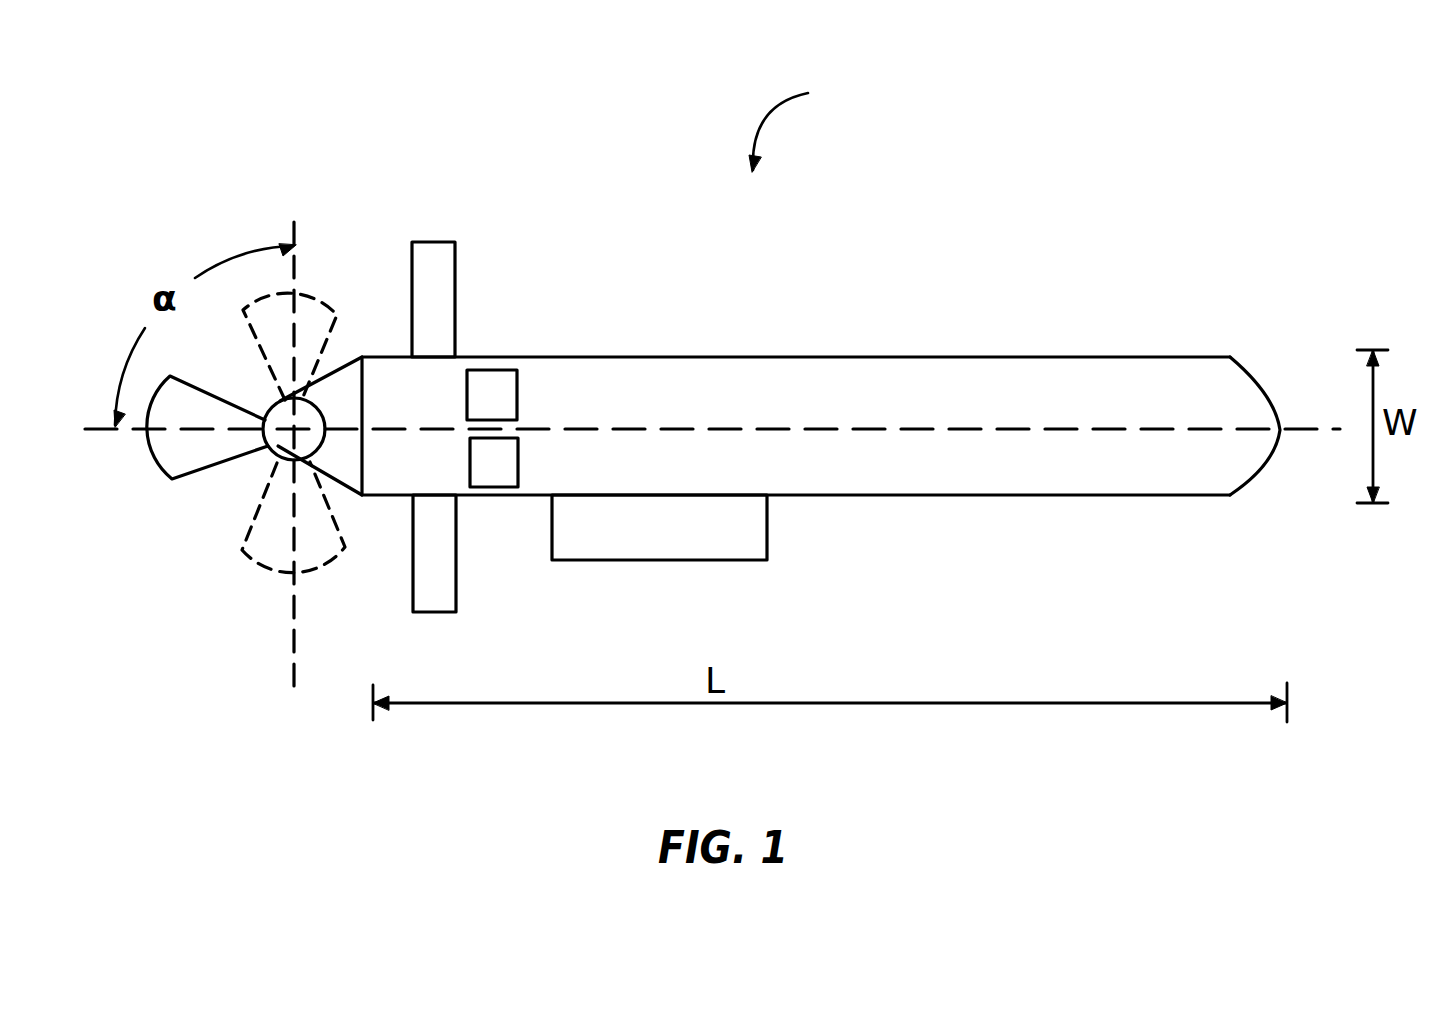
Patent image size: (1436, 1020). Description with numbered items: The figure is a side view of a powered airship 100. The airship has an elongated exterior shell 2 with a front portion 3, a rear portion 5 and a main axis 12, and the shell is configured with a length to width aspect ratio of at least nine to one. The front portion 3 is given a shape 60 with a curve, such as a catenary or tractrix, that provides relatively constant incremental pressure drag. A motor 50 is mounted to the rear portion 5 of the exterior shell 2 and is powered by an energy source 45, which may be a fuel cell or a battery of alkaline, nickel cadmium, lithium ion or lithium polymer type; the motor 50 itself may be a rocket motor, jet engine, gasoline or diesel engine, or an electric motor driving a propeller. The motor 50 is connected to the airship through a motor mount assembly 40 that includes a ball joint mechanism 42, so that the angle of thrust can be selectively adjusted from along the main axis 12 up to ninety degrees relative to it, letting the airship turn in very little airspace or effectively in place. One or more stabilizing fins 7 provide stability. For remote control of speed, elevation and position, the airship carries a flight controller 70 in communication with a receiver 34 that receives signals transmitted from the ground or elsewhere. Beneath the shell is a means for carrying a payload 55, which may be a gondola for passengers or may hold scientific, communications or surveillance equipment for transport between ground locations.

The powered airship 100 is at (816, 125).
The exterior shell 2 is at (818, 357).
The front portion 3 is at (1246, 345).
The rear portion 5 is at (397, 345).
The stabilizing fins 7 is at (432, 267).
The main axis 12 is at (1296, 428).
The receiver 34 is at (497, 390).
The motor mount assembly 40 is at (297, 463).
The ball joint mechanism 42 is at (282, 441).
The energy source 45 is at (428, 479).
The motor 50 is at (155, 455).
The payload 55 is at (676, 544).
The shape 60 is at (1248, 475).
The flight controller 70 is at (497, 457).